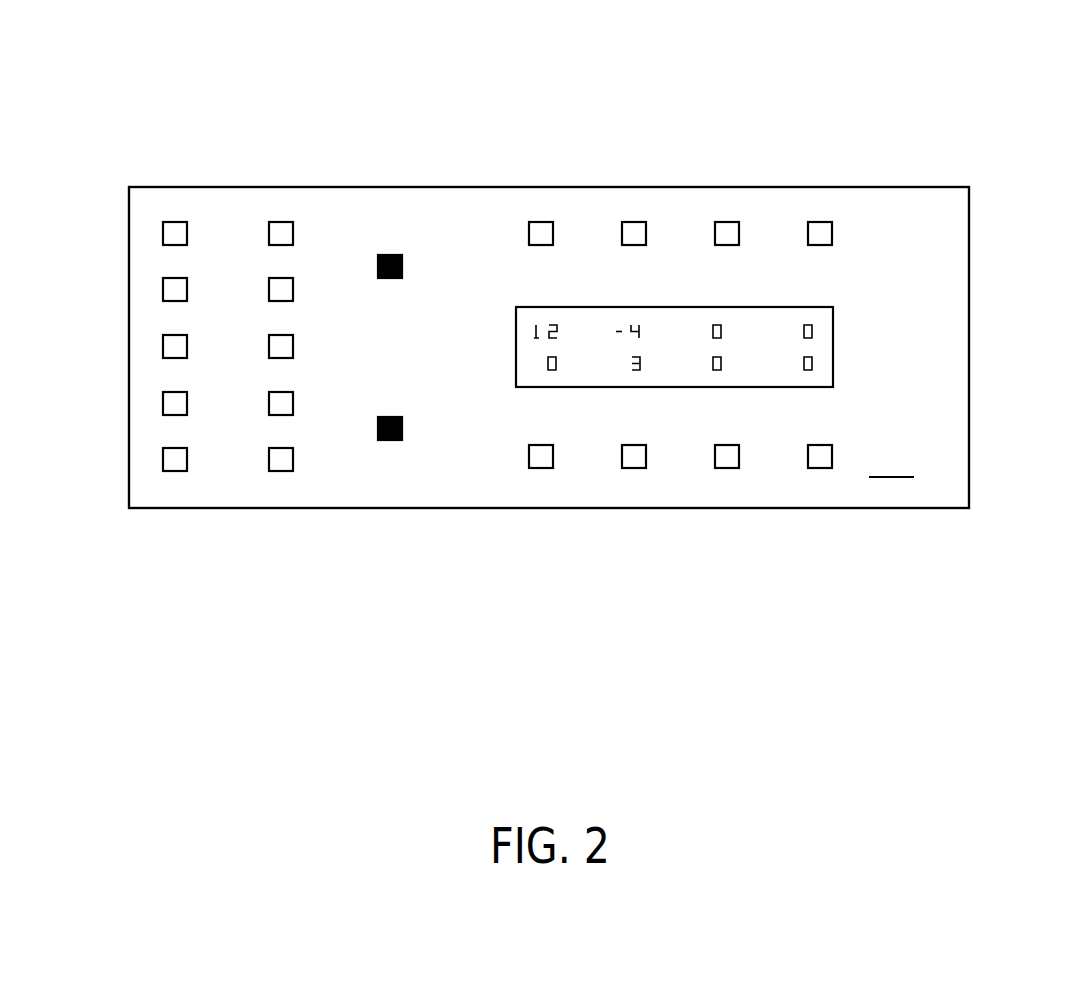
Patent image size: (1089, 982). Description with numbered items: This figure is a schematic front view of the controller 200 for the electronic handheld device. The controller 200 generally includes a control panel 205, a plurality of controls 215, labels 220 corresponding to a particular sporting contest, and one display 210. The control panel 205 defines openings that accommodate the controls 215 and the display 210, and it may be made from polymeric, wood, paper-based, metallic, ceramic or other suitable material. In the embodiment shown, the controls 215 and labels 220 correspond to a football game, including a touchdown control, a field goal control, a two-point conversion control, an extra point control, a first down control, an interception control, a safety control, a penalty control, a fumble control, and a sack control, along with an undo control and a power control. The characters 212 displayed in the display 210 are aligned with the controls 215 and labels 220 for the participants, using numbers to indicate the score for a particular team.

The controller 200 is at (95, 122).
The control panel 205 is at (387, 207).
The display 210 is at (812, 363).
The characters 212 is at (813, 326).
The controls 215 is at (163, 232).
The labels 220 is at (218, 232).